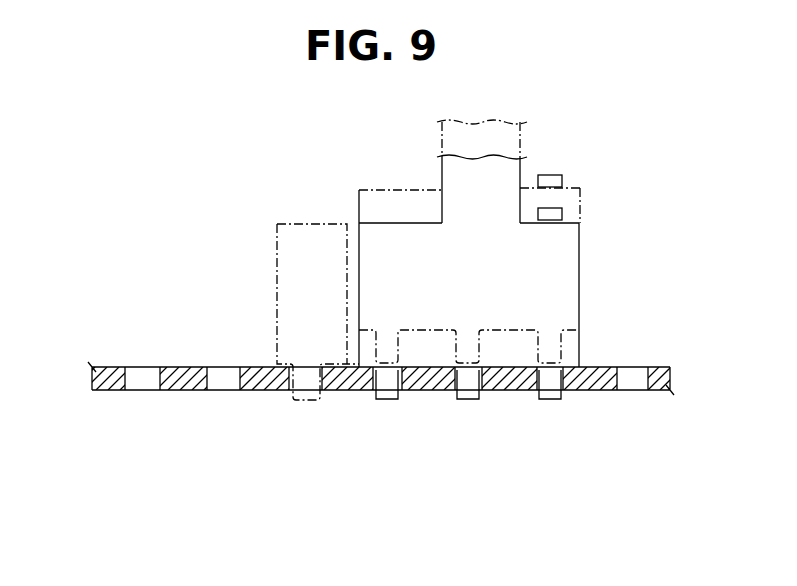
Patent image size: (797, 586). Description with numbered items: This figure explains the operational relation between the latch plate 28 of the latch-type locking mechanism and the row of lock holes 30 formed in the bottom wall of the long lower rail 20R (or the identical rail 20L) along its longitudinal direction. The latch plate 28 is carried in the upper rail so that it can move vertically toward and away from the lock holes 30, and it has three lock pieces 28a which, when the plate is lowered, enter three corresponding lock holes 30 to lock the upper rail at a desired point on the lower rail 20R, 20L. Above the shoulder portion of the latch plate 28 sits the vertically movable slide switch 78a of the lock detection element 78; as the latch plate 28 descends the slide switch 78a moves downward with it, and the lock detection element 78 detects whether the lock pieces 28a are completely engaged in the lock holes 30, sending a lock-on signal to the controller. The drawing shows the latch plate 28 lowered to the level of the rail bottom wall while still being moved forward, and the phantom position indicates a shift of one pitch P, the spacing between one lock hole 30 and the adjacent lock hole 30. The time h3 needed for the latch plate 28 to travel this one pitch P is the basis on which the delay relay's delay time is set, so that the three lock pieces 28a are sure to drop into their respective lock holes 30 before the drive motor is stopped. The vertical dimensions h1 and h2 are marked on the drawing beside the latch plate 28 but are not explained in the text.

The lower rail 20R is at (383, 376).
The lower rail 20L is at (383, 376).
The lock holes 30 is at (128, 386).
The latch plate 28 is at (454, 292).
The lock pieces 28a is at (391, 342).
The slide switch 78a is at (560, 175).
The lock detection element 78 is at (604, 170).
The height h1 is at (606, 202).
The height h2 is at (605, 273).
The time h3 is at (348, 204).
The pitch P is at (308, 400).